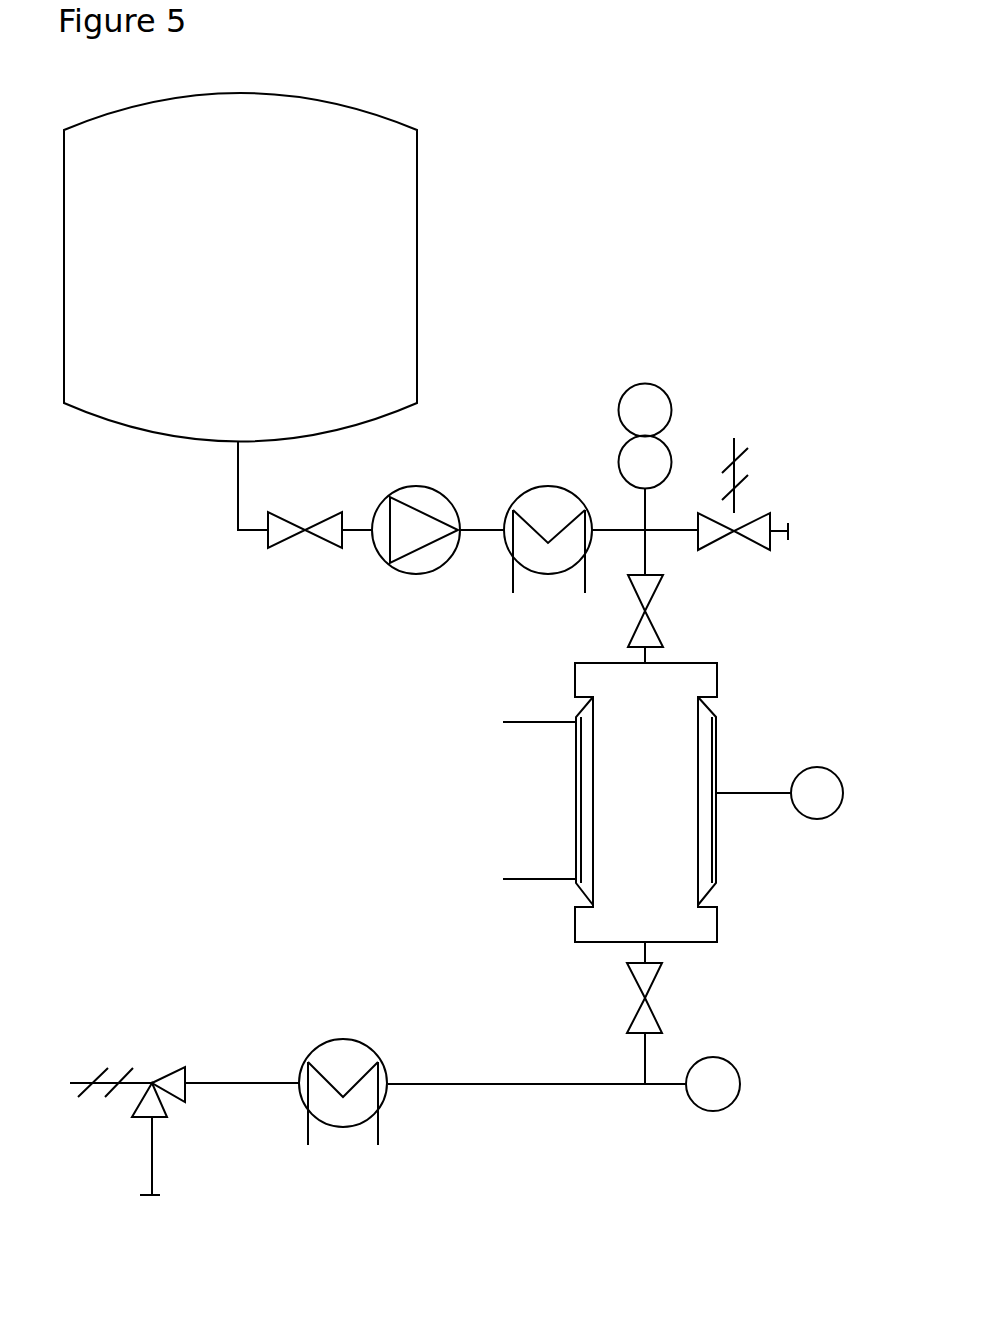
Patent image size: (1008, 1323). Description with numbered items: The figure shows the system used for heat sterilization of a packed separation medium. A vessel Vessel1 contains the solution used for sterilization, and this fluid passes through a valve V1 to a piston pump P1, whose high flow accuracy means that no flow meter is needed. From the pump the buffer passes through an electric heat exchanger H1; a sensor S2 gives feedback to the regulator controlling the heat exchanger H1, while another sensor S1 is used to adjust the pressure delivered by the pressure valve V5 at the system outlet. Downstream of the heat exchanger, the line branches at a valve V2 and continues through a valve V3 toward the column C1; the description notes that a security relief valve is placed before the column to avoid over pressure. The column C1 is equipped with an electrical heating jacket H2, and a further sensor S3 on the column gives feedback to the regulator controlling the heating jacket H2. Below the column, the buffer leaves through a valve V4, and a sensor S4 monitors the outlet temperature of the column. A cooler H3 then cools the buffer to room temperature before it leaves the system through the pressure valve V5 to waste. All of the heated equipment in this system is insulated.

The vessel Vessel1 is at (240, 311).
The valve V1 is at (320, 506).
The piston pump P1 is at (438, 508).
The electric heat exchanger H1 is at (601, 531).
The sensor S1 is at (666, 401).
The sensor S2 is at (666, 498).
The waste valve V2 is at (798, 512).
The valve V3 is at (668, 619).
The column C1 is at (678, 801).
The electrical heating jacket H2 is at (627, 801).
The temperature sensor S3 is at (803, 793).
The valve V4 is at (666, 1013).
The sensor S4 is at (590, 1084).
The cooler H3 is at (309, 1093).
The pressure valve V5 is at (130, 1120).